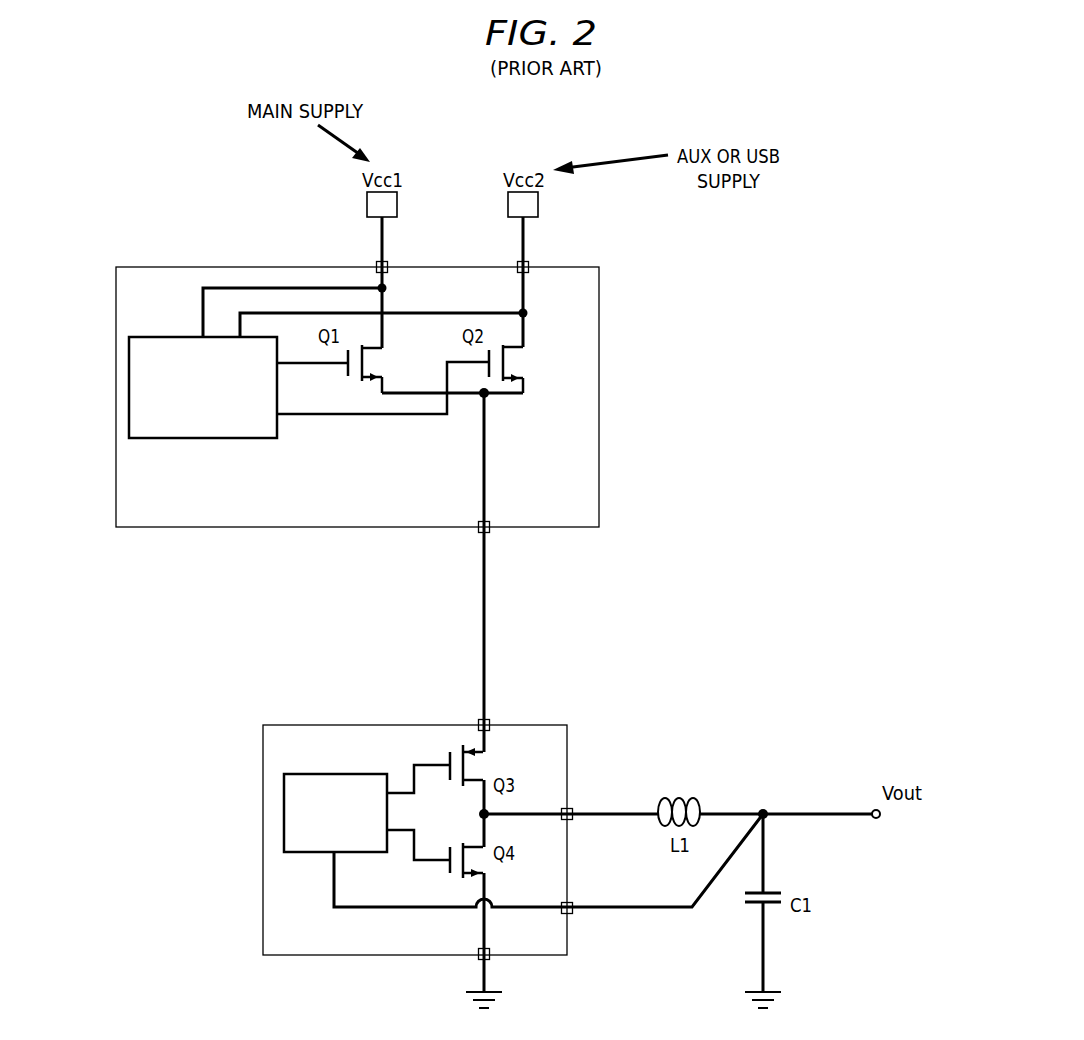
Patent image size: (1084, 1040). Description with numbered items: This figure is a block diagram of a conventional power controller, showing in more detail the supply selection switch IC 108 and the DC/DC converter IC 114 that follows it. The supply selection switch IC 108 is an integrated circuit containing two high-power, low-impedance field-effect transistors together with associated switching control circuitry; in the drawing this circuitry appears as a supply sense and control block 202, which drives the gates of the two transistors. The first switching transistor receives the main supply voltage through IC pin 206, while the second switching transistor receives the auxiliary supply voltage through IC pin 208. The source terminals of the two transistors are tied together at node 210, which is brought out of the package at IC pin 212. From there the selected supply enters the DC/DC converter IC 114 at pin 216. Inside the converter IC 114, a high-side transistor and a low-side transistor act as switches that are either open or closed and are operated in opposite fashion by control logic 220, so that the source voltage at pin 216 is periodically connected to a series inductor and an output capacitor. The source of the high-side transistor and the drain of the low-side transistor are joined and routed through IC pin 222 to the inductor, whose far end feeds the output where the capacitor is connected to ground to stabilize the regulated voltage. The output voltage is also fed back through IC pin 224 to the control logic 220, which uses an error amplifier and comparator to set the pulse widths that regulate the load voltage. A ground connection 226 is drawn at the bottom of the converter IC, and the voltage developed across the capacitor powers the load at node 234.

The supply selection switch IC 108 is at (212, 267).
The supply sense and control circuit 202 is at (129, 363).
The IC pin 206 is at (400, 205).
The IC pin 208 is at (541, 205).
The node 210 is at (488, 398).
The IC pin 212 is at (478, 534).
The DC/DC converter IC 114 is at (263, 752).
The pin 216 is at (490, 731).
The control logic 220 is at (284, 810).
The IC pin 222 is at (573, 818).
The IC pin 224 is at (573, 912).
The ground terminal 226 is at (490, 960).
The node 234 is at (879, 819).